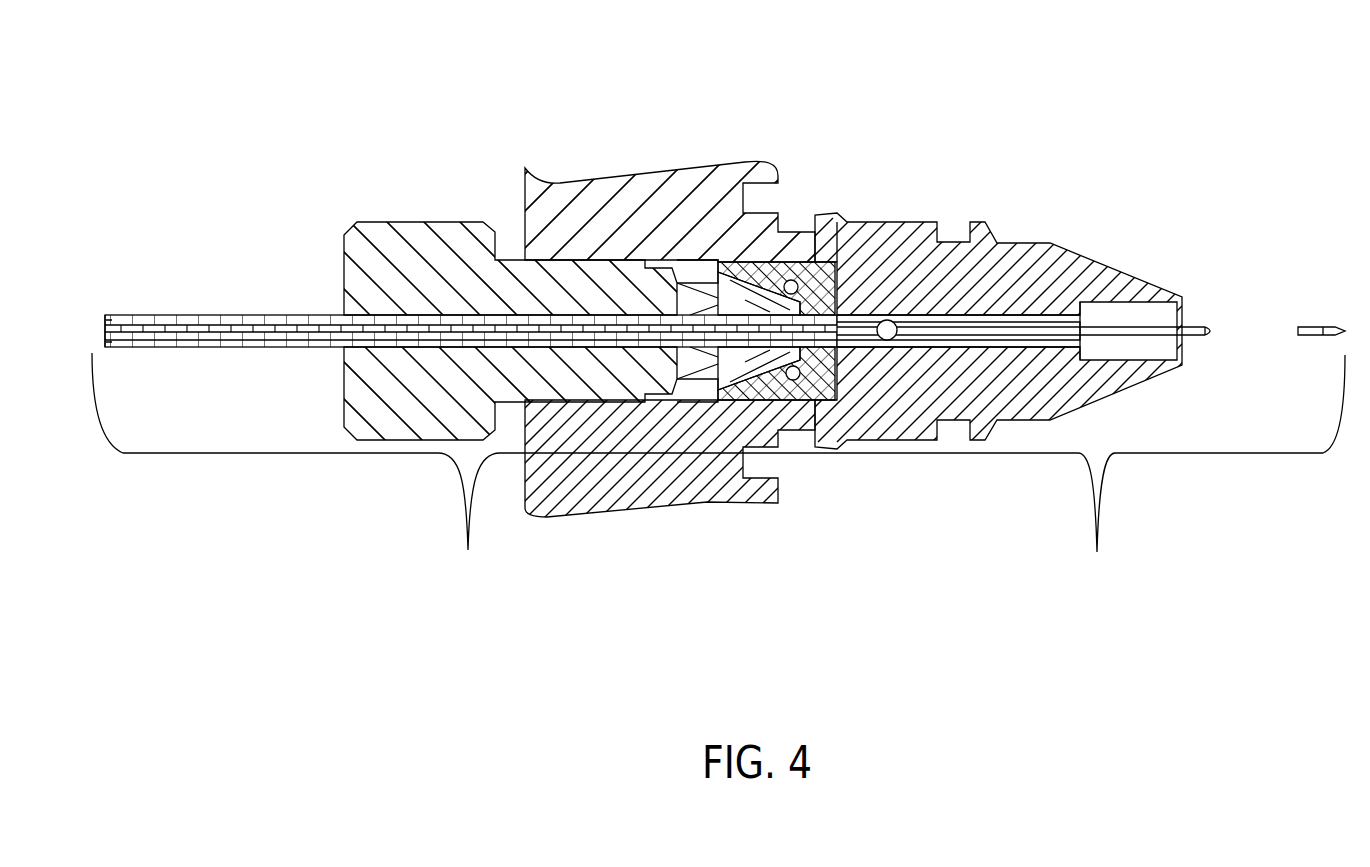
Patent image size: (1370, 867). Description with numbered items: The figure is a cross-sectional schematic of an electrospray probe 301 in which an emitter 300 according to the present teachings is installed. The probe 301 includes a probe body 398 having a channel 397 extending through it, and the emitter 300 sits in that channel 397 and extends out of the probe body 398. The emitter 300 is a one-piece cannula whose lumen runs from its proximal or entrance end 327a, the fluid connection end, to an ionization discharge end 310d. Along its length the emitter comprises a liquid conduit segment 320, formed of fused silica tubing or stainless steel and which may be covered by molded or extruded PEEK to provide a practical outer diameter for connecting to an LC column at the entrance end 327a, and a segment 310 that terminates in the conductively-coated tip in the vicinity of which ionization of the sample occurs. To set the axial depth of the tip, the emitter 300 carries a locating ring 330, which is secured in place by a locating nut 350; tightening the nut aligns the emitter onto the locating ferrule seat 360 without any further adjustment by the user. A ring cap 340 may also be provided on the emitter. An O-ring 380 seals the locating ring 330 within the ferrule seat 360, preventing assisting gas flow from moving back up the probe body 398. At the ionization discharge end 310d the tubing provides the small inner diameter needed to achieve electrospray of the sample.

The emitter 300 is at (272, 303).
The proximal end 327a is at (117, 315).
The electrospray probe 301 is at (722, 130).
The locating nut 350 is at (427, 248).
The liquid conduit segment 320 is at (718, 473).
The locating ring 330 is at (768, 364).
The ring cap 340 is at (696, 365).
The locating ferrule seat 360 is at (815, 378).
The O-ring 380 is at (791, 280).
The probe body 398 is at (898, 235).
The channel 397 is at (980, 344).
The segment 310 is at (1097, 447).
The ionization discharge end 310d is at (1337, 313).